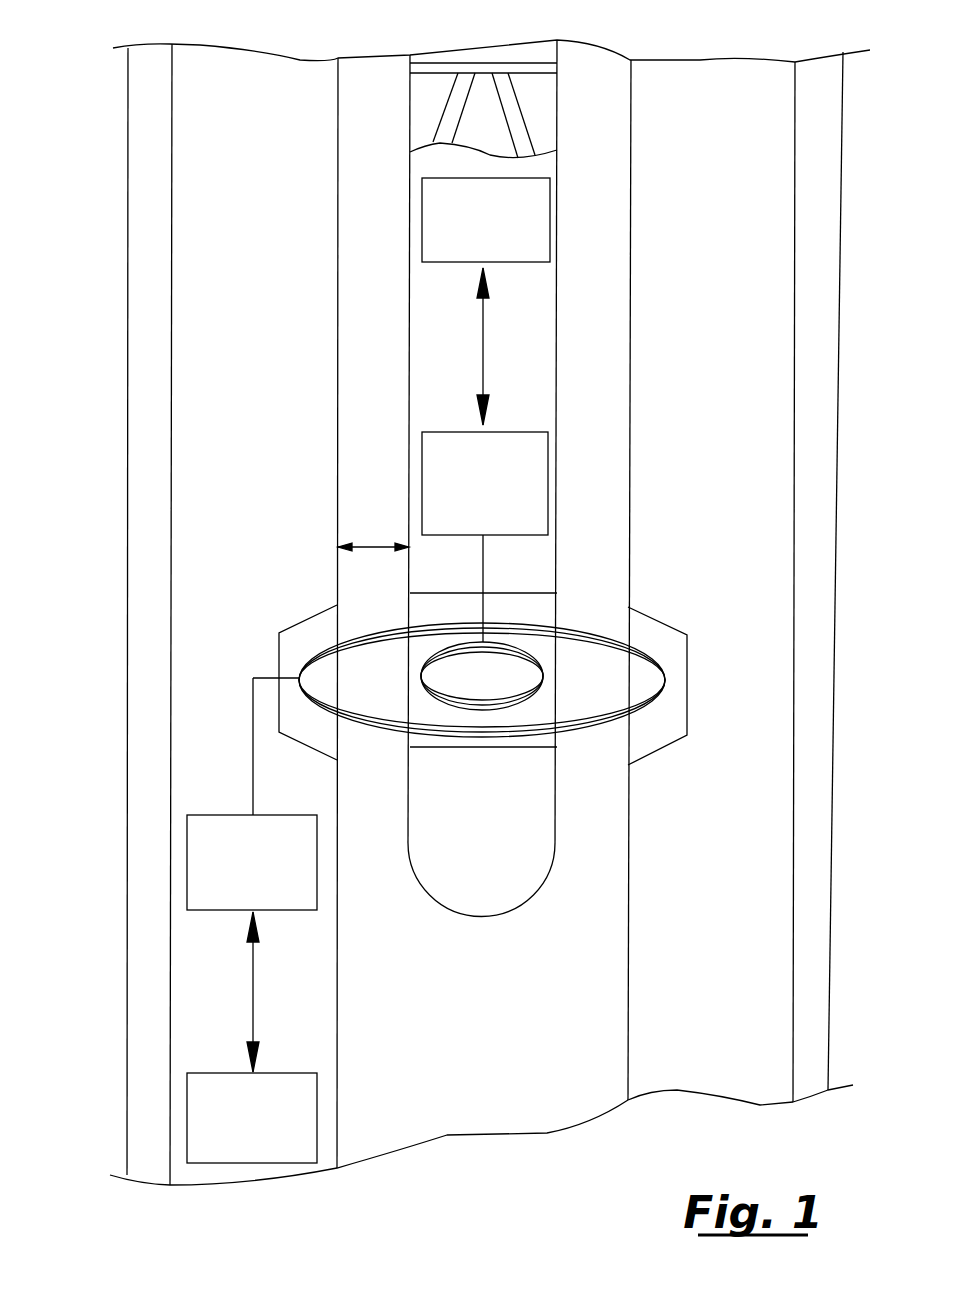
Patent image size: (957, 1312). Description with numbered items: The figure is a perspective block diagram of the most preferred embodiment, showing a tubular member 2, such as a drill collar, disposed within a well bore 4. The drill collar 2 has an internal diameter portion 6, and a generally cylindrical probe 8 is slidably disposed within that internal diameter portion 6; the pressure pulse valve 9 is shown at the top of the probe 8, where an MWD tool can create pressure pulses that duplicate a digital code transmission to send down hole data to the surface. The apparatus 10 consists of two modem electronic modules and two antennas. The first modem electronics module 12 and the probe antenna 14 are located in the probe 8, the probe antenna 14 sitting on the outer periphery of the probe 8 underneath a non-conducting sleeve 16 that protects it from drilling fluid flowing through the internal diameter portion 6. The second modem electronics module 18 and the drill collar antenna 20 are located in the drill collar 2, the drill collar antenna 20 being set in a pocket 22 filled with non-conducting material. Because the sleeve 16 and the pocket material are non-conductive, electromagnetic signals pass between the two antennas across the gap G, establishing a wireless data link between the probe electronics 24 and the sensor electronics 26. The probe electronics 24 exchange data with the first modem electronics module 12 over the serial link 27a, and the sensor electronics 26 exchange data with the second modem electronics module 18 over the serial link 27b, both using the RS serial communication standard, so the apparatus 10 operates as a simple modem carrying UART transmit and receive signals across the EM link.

The tubular member 2 is at (198, 377).
The well bore 4 is at (836, 514).
The internal diameter portion 6 is at (338, 133).
The probe 8 is at (542, 165).
The pressure pulse valve 9 is at (435, 85).
The apparatus 10 is at (305, 560).
The first modem electronics module 12 is at (540, 480).
The probe antenna 14 is at (542, 670).
The non-conducting sleeve 16 is at (540, 605).
The second modem electronics module 18 is at (197, 830).
The drill collar antenna 20 is at (307, 660).
The pocket 22 is at (278, 650).
The probe electronics 24 is at (542, 212).
The sensor electronics 26 is at (197, 1097).
The RS-232 link 27a is at (420, 338).
The RS-232 link 27b is at (197, 992).
The gap distance G is at (372, 543).